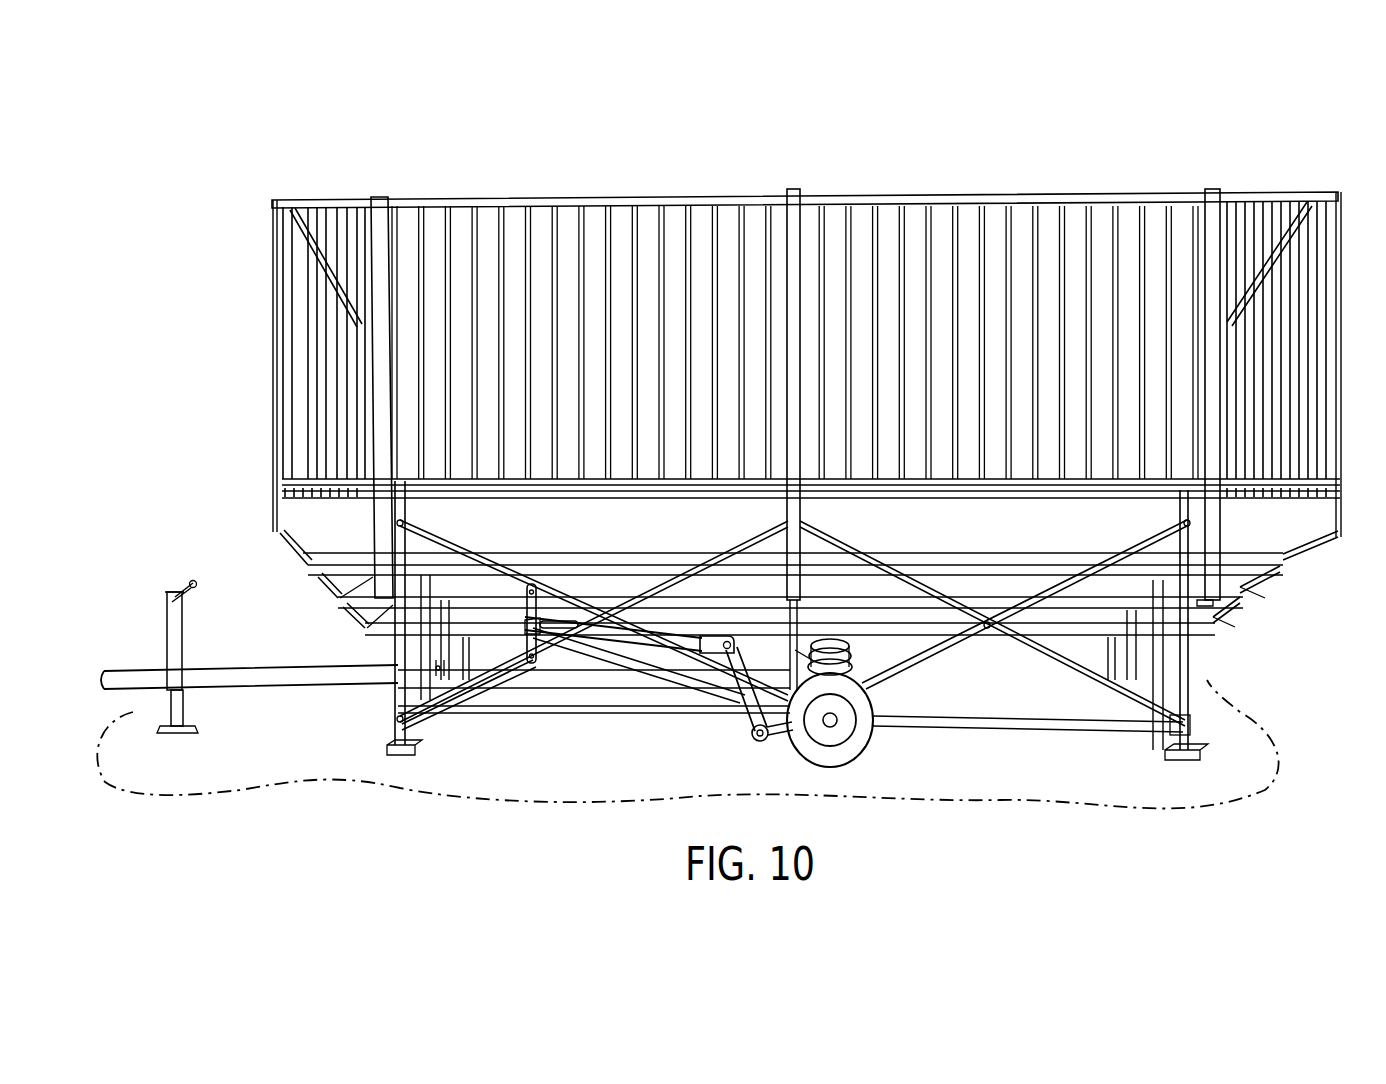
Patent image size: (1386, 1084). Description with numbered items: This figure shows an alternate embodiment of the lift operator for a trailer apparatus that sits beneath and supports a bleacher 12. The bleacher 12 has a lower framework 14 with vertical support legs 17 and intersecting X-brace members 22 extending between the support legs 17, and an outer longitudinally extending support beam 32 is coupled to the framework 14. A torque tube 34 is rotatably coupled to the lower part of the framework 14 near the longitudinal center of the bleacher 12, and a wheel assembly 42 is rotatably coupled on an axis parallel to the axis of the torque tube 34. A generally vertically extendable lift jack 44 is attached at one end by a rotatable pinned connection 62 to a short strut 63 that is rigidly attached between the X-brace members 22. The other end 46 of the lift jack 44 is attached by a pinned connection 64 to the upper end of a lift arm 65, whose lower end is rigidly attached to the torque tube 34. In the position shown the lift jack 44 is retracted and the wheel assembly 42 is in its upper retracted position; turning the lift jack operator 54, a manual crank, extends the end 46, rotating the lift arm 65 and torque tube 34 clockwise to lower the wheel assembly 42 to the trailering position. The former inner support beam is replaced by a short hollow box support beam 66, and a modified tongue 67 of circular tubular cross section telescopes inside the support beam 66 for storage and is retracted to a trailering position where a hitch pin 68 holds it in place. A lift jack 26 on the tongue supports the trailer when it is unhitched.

The bleacher 12 is at (872, 146).
The lower framework 14 is at (1316, 602).
The vertical support legs 17 is at (1190, 660).
The brace members 22 is at (432, 541).
The lift jack 26 is at (187, 695).
The outer longitudinally extending support beam 32 is at (633, 707).
The torque tube 34 is at (764, 740).
The wheel assembly 42 is at (862, 738).
The lift jack 44 is at (592, 618).
The lower end 46 is at (744, 703).
The lift jack operator 54 is at (562, 633).
The rotatable pinned connection 62 is at (531, 584).
The short strut 63 is at (492, 686).
The pinned connection 64 is at (722, 636).
The lift arm 65 is at (740, 700).
The support beam 66 is at (580, 683).
The tongue 67 is at (283, 676).
The hitch pin 68 is at (438, 667).